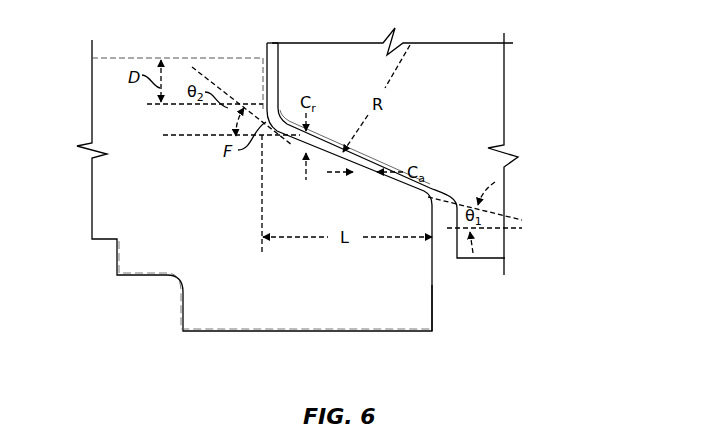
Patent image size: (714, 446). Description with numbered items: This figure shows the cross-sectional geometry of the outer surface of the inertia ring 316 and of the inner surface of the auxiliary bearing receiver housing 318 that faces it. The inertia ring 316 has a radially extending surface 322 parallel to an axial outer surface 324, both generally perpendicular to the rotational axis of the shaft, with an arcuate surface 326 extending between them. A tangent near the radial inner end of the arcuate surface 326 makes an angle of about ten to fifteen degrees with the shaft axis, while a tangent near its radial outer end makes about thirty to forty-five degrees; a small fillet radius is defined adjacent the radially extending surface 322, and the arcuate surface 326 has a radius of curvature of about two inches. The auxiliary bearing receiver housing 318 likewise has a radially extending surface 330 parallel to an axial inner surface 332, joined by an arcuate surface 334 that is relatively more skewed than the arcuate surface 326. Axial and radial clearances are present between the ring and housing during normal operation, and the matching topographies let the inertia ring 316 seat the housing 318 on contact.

The inertia ring 316 is at (349, 321).
The auxiliary bearing receiver housing 318 is at (486, 80).
The radially extending surface 322 is at (266, 90).
The axial outer surface 324 is at (432, 293).
The arcuate surface 326 is at (346, 167).
The radially extending surface 330 is at (274, 60).
The axial inner surface 332 is at (455, 247).
The arcuate surface 334 is at (412, 186).